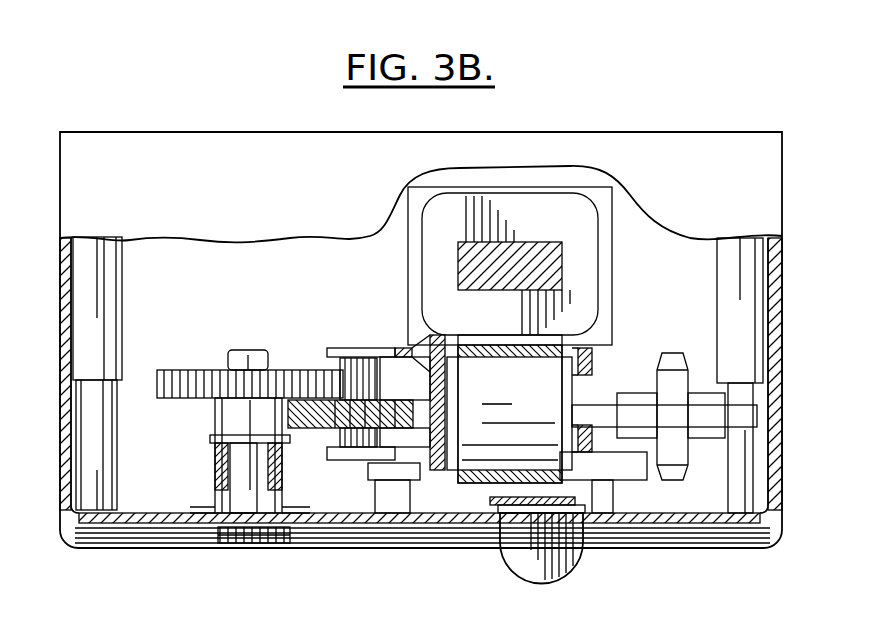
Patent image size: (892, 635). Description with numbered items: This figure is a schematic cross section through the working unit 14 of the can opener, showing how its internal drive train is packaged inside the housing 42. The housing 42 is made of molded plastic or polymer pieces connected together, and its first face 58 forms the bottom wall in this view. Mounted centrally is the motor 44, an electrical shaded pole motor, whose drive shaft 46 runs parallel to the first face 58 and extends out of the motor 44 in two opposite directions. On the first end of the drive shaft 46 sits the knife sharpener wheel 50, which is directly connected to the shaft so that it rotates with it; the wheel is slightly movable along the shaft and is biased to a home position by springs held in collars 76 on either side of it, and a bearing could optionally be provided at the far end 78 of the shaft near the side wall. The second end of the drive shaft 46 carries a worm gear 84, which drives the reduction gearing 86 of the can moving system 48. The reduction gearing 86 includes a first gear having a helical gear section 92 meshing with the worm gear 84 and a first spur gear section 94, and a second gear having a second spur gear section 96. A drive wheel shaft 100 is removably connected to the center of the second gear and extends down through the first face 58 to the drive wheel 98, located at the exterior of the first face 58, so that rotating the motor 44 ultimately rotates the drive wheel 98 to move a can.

The working unit 14 is at (658, 550).
The housing 42 is at (645, 130).
The motor 44 is at (507, 350).
The drive shaft 46 is at (590, 408).
The can moving system 48 is at (262, 541).
The knife sharpener wheel 50 is at (670, 352).
The first face 58 is at (445, 515).
The collars 76 is at (650, 413).
The far end 78 is at (740, 405).
The worm gear 84 is at (356, 449).
The reduction gearing 86 is at (195, 368).
The helical gear section 92 is at (308, 430).
The first spur gear section 94 is at (360, 372).
The second spur gear section 96 is at (282, 368).
The drive wheel 98 is at (215, 540).
The drive wheel shaft 100 is at (245, 500).